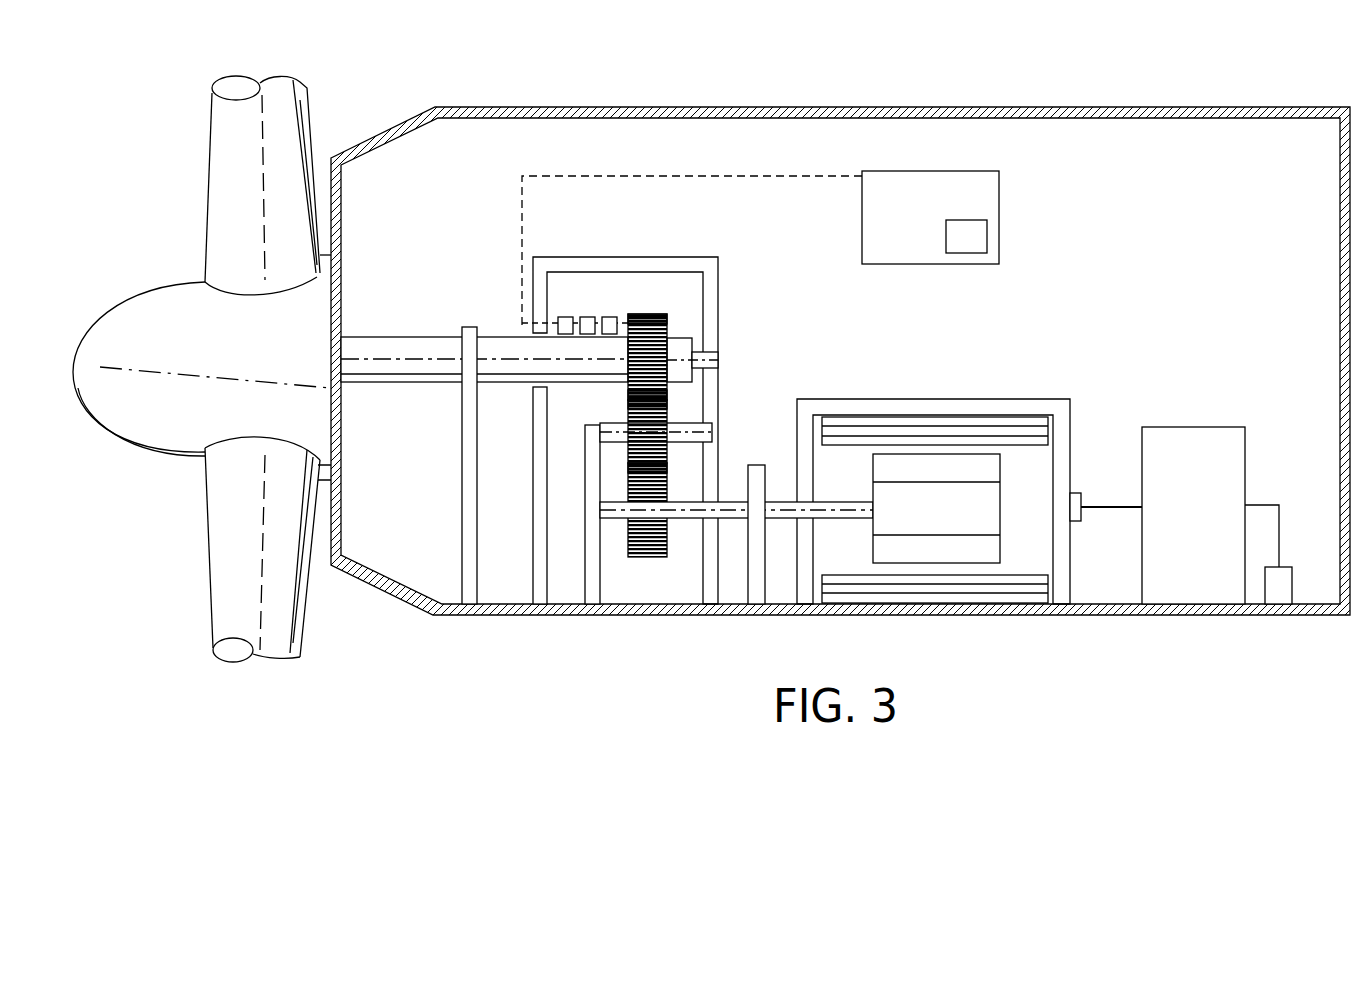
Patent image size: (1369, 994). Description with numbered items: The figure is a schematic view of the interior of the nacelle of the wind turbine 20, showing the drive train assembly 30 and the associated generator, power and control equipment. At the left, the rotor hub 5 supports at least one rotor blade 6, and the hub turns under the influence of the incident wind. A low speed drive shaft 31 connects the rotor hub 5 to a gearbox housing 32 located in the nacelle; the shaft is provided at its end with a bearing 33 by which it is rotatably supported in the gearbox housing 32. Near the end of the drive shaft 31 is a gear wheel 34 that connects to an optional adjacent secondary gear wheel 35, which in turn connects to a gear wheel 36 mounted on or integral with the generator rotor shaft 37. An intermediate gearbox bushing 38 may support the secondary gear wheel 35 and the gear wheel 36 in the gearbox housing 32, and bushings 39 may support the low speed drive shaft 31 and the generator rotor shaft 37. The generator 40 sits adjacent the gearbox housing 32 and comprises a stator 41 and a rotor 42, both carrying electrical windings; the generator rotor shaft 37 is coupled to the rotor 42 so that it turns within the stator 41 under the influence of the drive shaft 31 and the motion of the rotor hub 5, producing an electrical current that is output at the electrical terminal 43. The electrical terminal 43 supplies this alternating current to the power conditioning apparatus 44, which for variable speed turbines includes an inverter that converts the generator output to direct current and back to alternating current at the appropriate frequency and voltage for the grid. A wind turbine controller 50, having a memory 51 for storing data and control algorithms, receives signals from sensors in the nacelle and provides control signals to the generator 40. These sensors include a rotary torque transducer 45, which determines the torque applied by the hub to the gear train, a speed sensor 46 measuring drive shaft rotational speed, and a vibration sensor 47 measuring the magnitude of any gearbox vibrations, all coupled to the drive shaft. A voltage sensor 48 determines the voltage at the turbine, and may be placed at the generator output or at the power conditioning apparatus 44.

The rotor hub 5 is at (140, 425).
The rotor blade 6 is at (225, 560).
The wind turbine 20 is at (672, 92).
The drive train assembly 30 is at (498, 240).
The low speed drive shaft 31 is at (403, 340).
The gearbox housing 32 is at (710, 257).
The bearing 33 is at (718, 360).
The gear wheel 34 is at (667, 326).
The secondary gear wheel 35 is at (628, 410).
The gear wheel 36 is at (647, 557).
The generator rotor shaft 37 is at (732, 518).
The intermediate gearbox bushing 38 is at (592, 592).
The bushing 39 is at (468, 327).
The generator 40 is at (1028, 399).
The stator 41 is at (935, 427).
The rotor 42 is at (950, 522).
The electrical terminal 43 is at (1077, 523).
The power conditioning apparatus 44 is at (1197, 427).
The rotary torque transducer 45 is at (570, 317).
The speed sensor 46 is at (591, 317).
The vibration sensor 47 is at (614, 317).
The voltage sensor 48 is at (1287, 567).
The wind turbine controller 50 is at (872, 235).
The memory 51 is at (980, 238).